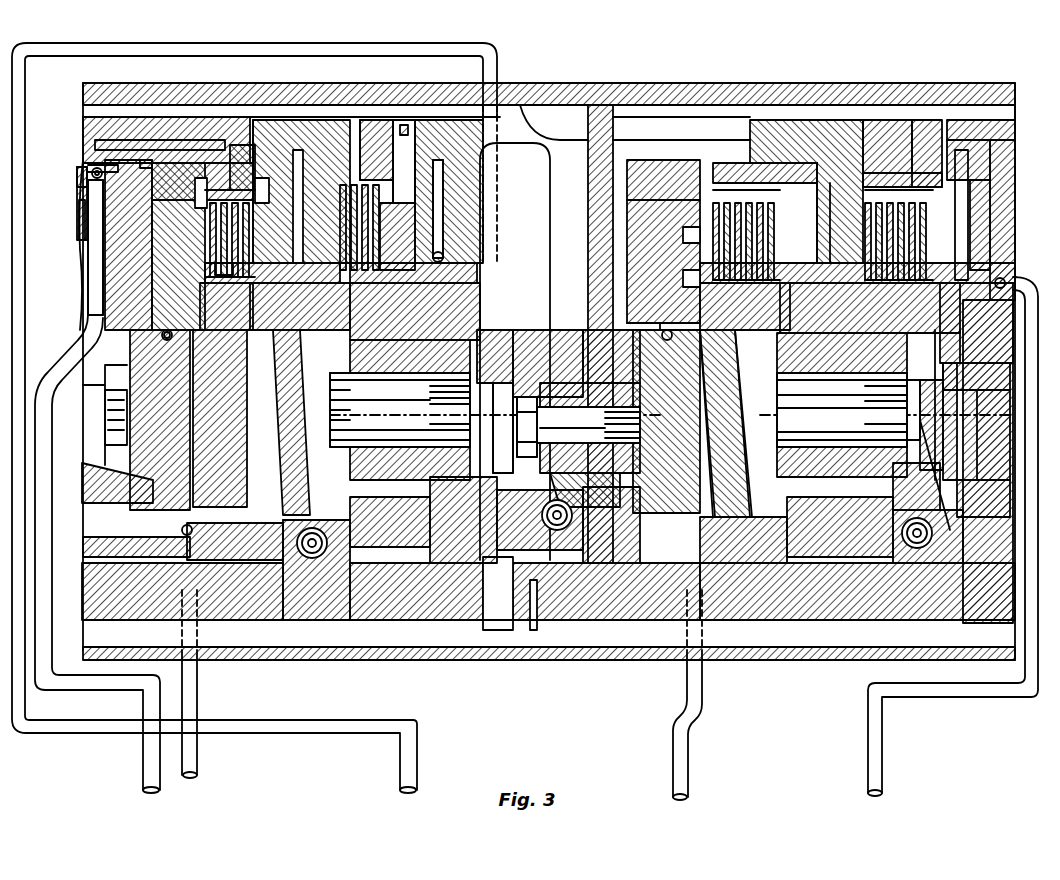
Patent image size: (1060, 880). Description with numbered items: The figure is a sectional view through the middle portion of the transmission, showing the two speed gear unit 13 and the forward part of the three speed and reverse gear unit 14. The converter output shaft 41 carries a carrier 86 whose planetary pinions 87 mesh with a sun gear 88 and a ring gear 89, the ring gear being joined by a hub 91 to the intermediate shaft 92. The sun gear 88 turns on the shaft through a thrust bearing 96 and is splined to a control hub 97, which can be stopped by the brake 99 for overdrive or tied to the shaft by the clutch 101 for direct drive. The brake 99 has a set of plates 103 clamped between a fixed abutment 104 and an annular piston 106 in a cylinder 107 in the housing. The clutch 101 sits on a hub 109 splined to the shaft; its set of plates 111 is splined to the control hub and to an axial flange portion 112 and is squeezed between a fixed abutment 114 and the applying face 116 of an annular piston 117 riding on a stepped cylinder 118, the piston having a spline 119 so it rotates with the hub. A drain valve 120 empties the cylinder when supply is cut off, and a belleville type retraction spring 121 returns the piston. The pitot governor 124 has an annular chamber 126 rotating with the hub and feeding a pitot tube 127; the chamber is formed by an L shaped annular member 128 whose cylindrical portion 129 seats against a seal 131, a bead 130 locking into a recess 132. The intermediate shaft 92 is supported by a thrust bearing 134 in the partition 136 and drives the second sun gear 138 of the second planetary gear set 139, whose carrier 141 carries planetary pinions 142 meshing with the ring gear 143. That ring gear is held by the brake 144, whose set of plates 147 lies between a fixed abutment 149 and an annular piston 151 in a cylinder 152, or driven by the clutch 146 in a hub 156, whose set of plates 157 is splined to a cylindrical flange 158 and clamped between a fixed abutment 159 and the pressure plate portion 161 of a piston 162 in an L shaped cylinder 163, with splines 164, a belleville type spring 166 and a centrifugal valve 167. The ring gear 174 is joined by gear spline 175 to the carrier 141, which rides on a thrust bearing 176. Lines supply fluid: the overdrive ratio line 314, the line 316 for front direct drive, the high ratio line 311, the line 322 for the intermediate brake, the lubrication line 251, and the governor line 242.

The two speed gear unit 13 is at (401, 92).
The three speed and reverse gear unit 14 is at (911, 82).
The converter output shaft 41 is at (85, 605).
The carrier 86 is at (465, 358).
The planetary pinions 87 is at (420, 385).
The sun gear 88 is at (360, 605).
The ring gear 89 is at (488, 308).
The hub 91 is at (503, 372).
The intermediate shaft 92 is at (640, 622).
The thrust bearing 96 is at (300, 620).
The control hub 97 is at (285, 408).
The brake 99 is at (372, 103).
The clutch 101 is at (180, 165).
The set of plates 103 is at (404, 140).
The fixed abutment 104 is at (318, 135).
The annular piston 106 is at (440, 180).
The cylinder 107 is at (441, 210).
The hub 109 is at (160, 368).
The set of plates 111 is at (213, 182).
The axial flange portion 112 is at (262, 148).
The fixed abutment 114 is at (262, 178).
The applying face 116 is at (232, 283).
The annular piston 117 is at (200, 410).
The stepped cylinder 118 is at (192, 450).
The spline 119 is at (150, 190).
The drain valve 120 is at (162, 337).
The belleville type retraction spring 121 is at (250, 425).
The pitot governor 124 is at (78, 276).
The annular chamber 126 is at (84, 230).
The pitot tube 127 is at (84, 176).
The L shaped annular member 128 is at (91, 173).
The cylindrical portion 129 is at (95, 166).
The bead 130 is at (170, 142).
The seal 131 is at (146, 166).
The recess 132 is at (158, 142).
The thrust bearing 134 is at (548, 505).
The partition 136 is at (583, 140).
The second sun gear 138 is at (848, 600).
The second planetary gear set 139 is at (946, 454).
The carrier 141 is at (808, 360).
The planetary pinions 142 is at (838, 370).
The ring gear 143 is at (755, 385).
The brake 144 is at (904, 121).
The clutch 146 is at (682, 143).
The set of plates 147 is at (892, 200).
The fixed abutment 149 is at (830, 128).
The annular piston 151 is at (985, 145).
The cylinder 152 is at (1010, 120).
The hub 156 is at (640, 375).
The set of plates 157 is at (725, 200).
The cylindrical flange 158 is at (745, 165).
The fixed abutment 159 is at (810, 245).
The pressure plate portion 161 is at (640, 262).
The piston 162 is at (708, 440).
The L shaped cylinder 163 is at (705, 420).
The splines 164 is at (685, 170).
The belleville type spring 166 is at (770, 455).
The centrifugal valve 167 is at (660, 325).
The ring gear 174 is at (975, 370).
The gear spline 175 is at (895, 370).
The thrust bearing 176 is at (915, 580).
The line 242 is at (142, 782).
The lubrication line 251 is at (290, 300).
The high ratio line 311 is at (690, 760).
The overdrive ratio line 314 is at (498, 60).
The line 316 is at (196, 770).
The line 322 is at (882, 773).